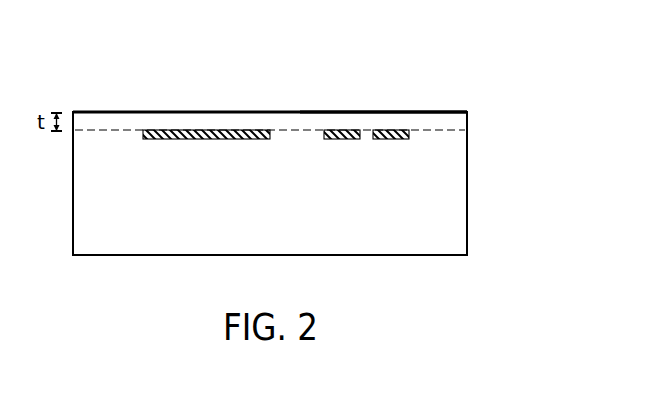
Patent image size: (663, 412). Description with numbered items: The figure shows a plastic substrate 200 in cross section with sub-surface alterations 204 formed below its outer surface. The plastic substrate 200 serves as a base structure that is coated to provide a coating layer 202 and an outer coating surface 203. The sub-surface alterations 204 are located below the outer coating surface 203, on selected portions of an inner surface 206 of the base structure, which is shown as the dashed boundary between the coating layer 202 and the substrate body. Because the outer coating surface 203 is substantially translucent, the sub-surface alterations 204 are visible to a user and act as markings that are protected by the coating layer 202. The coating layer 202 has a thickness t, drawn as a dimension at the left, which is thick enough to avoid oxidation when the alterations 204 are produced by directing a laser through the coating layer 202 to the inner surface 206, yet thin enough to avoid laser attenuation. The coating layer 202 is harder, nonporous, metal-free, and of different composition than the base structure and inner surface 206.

The plastic substrate 200 is at (469, 181).
The coating layer 202 is at (432, 111).
The outer coating surface 203 is at (453, 111).
The sub-surface alterations 204 is at (191, 129).
The inner surface 206 is at (102, 129).